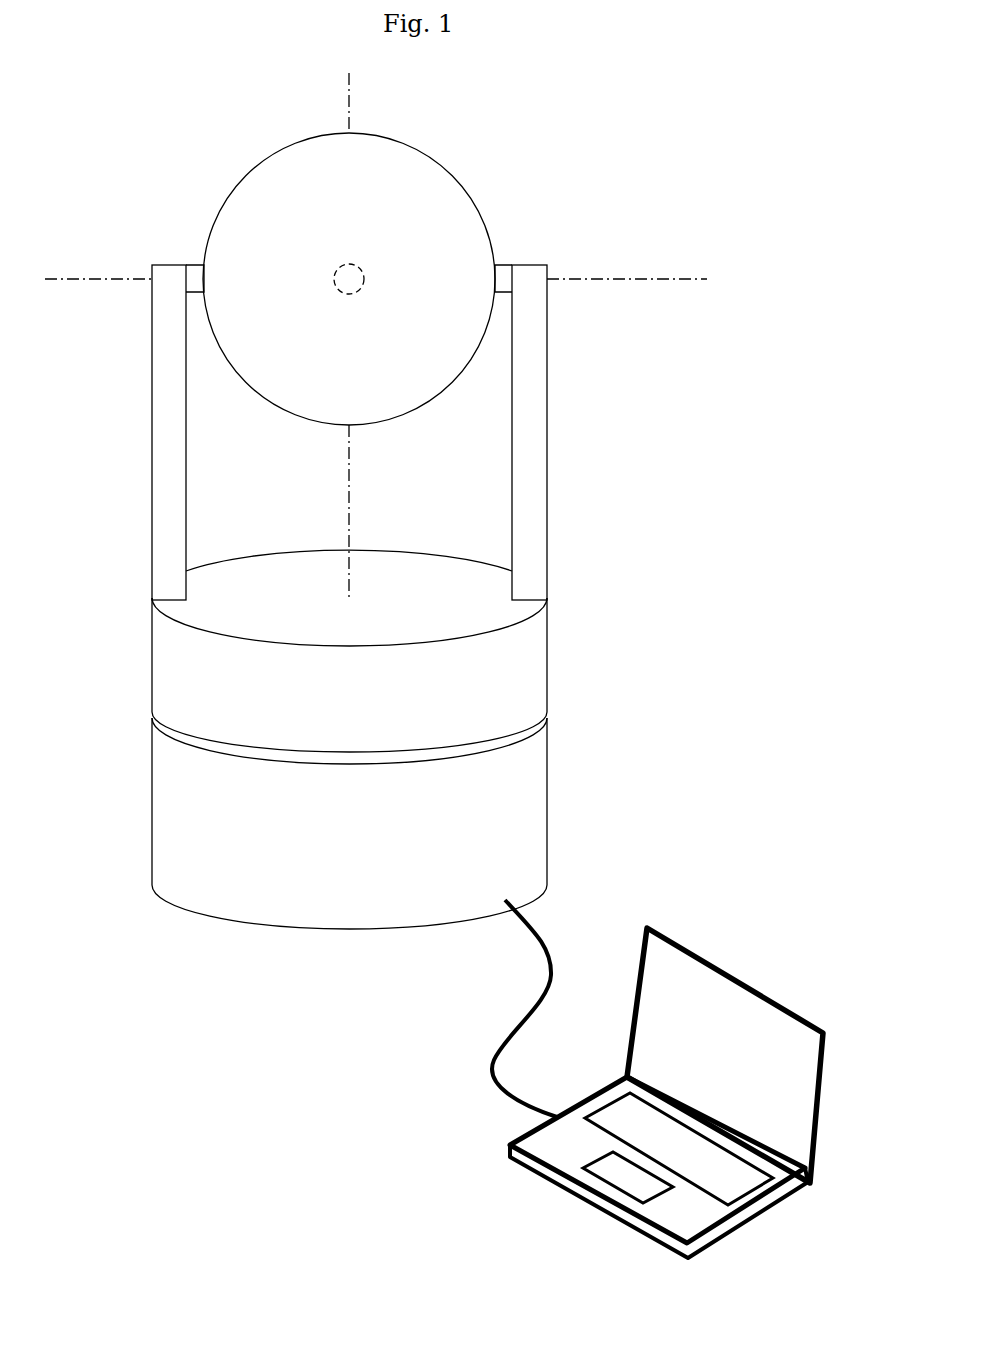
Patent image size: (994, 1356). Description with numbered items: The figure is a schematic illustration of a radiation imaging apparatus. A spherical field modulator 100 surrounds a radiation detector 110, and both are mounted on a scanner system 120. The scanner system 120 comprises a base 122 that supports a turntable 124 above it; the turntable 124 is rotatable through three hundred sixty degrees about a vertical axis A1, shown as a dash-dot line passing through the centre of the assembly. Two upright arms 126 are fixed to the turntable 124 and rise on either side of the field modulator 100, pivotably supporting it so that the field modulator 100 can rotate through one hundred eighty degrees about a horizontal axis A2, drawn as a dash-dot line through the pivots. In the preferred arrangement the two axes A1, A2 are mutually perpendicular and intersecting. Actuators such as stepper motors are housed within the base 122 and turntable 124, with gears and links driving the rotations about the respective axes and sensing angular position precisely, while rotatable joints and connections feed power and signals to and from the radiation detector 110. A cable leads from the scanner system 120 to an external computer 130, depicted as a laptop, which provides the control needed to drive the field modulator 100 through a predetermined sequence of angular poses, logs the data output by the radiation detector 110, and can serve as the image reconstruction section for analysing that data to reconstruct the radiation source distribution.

The field modulator 100 is at (427, 156).
The radiation detector 110 is at (360, 264).
The scanner system 120 is at (406, 597).
The base 122 is at (405, 823).
The turntable 124 is at (155, 663).
The arms 126 is at (152, 447).
The external computer 130 is at (558, 1186).
The vertical axis A1 is at (349, 104).
The horizontal axis A2 is at (618, 280).